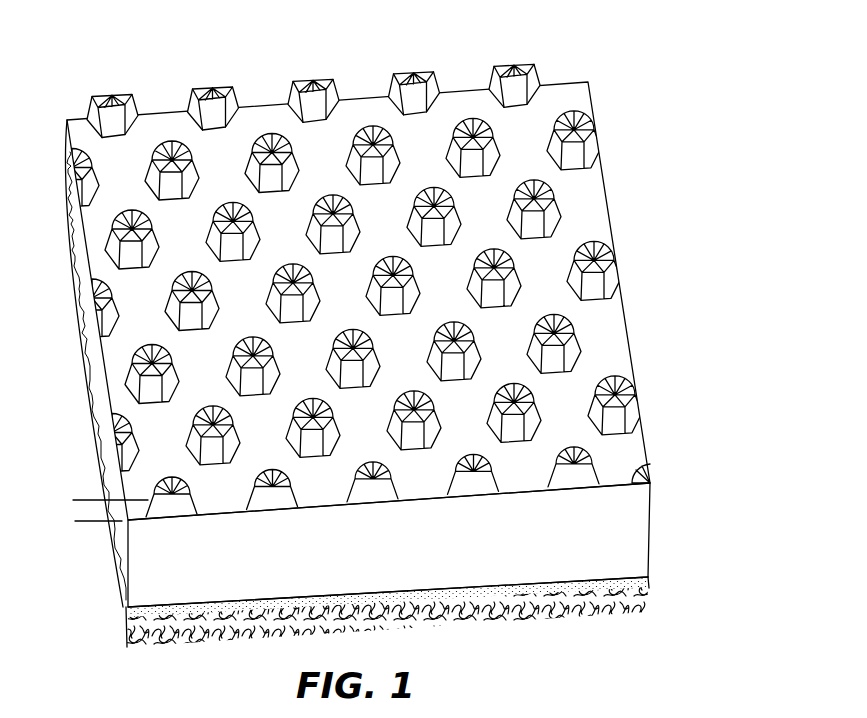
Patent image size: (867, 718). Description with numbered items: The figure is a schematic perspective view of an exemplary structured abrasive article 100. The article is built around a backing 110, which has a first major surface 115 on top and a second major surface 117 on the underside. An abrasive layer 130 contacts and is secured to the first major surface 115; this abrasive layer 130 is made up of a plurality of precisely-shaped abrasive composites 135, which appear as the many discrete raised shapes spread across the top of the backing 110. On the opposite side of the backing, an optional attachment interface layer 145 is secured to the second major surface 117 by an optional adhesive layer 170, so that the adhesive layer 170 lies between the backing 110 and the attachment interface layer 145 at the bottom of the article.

The structured abrasive article 100 is at (366, 361).
The backing 110 is at (651, 527).
The first major surface 115 is at (636, 480).
The second major surface 117 is at (648, 583).
The abrasive layer 130 is at (83, 521).
The precisely-shaped abrasive composites 135 is at (593, 121).
The attachment interface layer 145 is at (153, 636).
The adhesive layer 170 is at (122, 619).